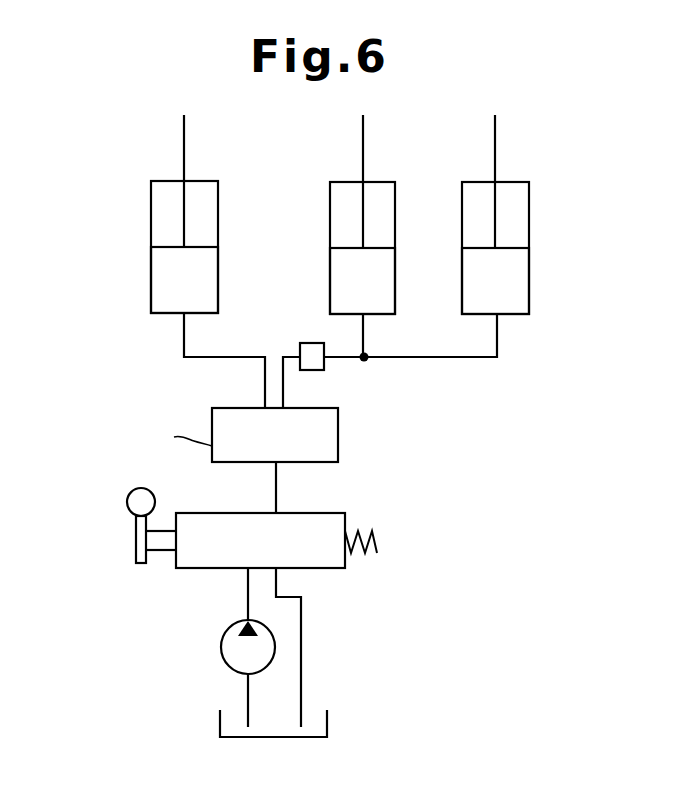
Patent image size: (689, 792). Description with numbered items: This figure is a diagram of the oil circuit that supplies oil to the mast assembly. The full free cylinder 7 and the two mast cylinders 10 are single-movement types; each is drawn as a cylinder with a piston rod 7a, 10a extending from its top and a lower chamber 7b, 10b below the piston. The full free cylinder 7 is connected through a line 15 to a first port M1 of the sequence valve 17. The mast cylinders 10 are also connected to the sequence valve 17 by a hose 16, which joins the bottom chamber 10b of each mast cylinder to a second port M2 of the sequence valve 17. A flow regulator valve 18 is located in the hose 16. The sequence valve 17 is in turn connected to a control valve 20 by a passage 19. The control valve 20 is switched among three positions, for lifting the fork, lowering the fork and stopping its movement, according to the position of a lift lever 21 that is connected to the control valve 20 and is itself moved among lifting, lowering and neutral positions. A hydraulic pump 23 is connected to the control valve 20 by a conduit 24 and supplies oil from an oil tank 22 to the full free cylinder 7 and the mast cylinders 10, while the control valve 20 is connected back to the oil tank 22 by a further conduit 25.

The full free cylinder 7 is at (151, 208).
The piston rod 7a is at (184, 137).
The cylinder chamber 7b is at (152, 288).
The mast cylinders 10 is at (330, 213).
The piston rod 10a is at (363, 139).
The bottom chamber 10b is at (470, 290).
The hydraulic line 15 is at (191, 360).
The hose 16 is at (348, 357).
The sequence valve 17 is at (338, 432).
The flow regulator valve 18 is at (310, 342).
The passage 19 is at (276, 495).
The control valve 20 is at (345, 513).
The lift lever 21 is at (136, 531).
The oil tank 22 is at (327, 722).
The hydraulic pump 23 is at (221, 646).
The conduit 24 is at (248, 592).
The conduit 25 is at (301, 618).
The first port M1 is at (264, 407).
The second port M2 is at (284, 408).